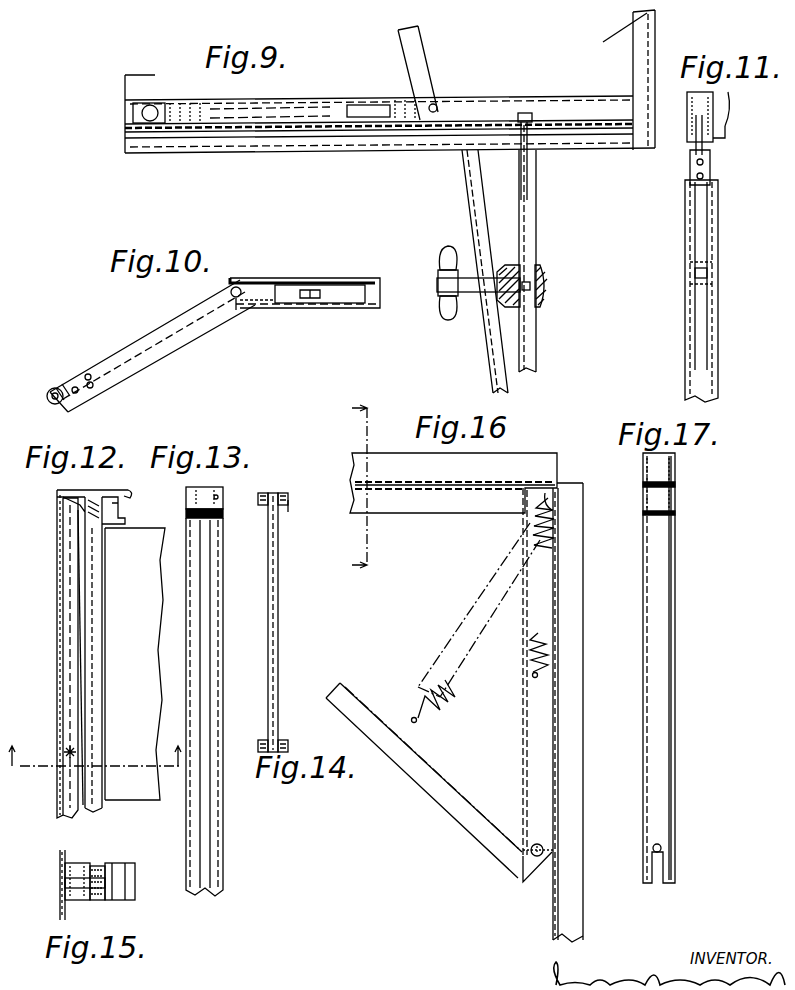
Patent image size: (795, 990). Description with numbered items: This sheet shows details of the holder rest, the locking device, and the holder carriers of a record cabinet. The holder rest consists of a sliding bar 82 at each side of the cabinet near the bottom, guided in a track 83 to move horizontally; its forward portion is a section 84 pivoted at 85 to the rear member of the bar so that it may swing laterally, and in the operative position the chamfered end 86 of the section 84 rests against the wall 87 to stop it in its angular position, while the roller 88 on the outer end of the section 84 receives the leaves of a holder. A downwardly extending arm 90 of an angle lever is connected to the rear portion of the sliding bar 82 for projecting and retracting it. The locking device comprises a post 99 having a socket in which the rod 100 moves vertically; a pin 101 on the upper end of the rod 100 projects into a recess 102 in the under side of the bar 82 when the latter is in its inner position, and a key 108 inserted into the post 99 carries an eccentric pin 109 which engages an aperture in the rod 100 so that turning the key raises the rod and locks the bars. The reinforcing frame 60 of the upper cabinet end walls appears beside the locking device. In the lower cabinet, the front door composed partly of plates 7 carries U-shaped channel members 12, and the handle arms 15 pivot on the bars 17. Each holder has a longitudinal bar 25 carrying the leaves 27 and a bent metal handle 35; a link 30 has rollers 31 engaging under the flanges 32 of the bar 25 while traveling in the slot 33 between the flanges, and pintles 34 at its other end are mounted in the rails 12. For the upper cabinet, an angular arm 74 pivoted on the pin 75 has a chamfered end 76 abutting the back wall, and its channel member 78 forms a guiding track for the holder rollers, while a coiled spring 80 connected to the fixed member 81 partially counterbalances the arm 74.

In FIG. 12, the plates 7 is at (57, 708).
In FIG. 12, the channel members 12 is at (67, 596).
In FIG. 12, the arms 15 is at (95, 760).
In FIG. 16, the bars 17 is at (352, 488).
In FIG. 12, the longitudinal bars 25 is at (102, 750).
In FIG. 13, the longitudinal bars 25 is at (232, 640).
In FIG. 15, the longitudinal bars 25 is at (112, 874).
In FIG. 12, the leaves 27 is at (135, 664).
In FIG. 12, the links 30 is at (84, 652).
In FIG. 14, the links 30 is at (280, 636).
In FIG. 12, the rollers 31 is at (96, 520).
In FIG. 14, the rollers 31 is at (283, 508).
In FIG. 15, the rollers 31 is at (96, 866).
In FIG. 13, the flanges 32 is at (214, 802).
In FIG. 15, the flanges 32 is at (86, 892).
In FIG. 13, the slot 33 is at (206, 722).
In FIG. 12, the pintles 34 is at (68, 762).
In FIG. 14, the pintles 34 is at (285, 746).
In FIG. 12, the handle 35 is at (60, 498).
In FIG. 13, the handle 35 is at (222, 494).
In FIG. 9, the reinforcing frame 60 is at (481, 371).
In FIG. 16, the angular arm 74 is at (517, 713).
In FIG. 17, the angular arm 74 is at (675, 716).
In FIG. 16, the pin 75 is at (530, 856).
In FIG. 17, the pin 75 is at (660, 846).
In FIG. 16, the chamfered end 76 is at (528, 885).
In FIG. 16, the member 78 is at (466, 514).
In FIG. 17, the member 78 is at (680, 504).
In FIG. 16, the coiled spring 80 is at (558, 548).
In FIG. 16, the fixed member 81 is at (552, 500).
In FIG. 9, the sliding bar 82 is at (496, 112).
In FIG. 11, the sliding bar 82 is at (709, 106).
In FIG. 9, the track 83 is at (126, 114).
In FIG. 9, the section 84 is at (302, 110).
In FIG. 10, the section 84 is at (370, 294).
In FIG. 9, the pivot 85 is at (360, 124).
In FIG. 10, the pivot 85 is at (234, 300).
In FIG. 10, the chamfered end 86 is at (240, 282).
In FIG. 10, the wall 87 is at (292, 280).
In FIG. 9, the roller 88 is at (142, 114).
In FIG. 10, the roller 88 is at (62, 398).
In FIG. 9, the arm 90 is at (430, 68).
In FIG. 9, the post 99 is at (553, 299).
In FIG. 9, the rod 100 is at (545, 238).
In FIG. 11, the rod 100 is at (689, 182).
In FIG. 9, the pin 101 is at (530, 136).
In FIG. 11, the pin 101 is at (690, 142).
In FIG. 9, the recess 102 is at (530, 114).
In FIG. 9, the key 108 is at (449, 314).
In FIG. 9, the eccentric pin 109 is at (537, 278).
In FIG. 11, the eccentric pin 109 is at (696, 274).